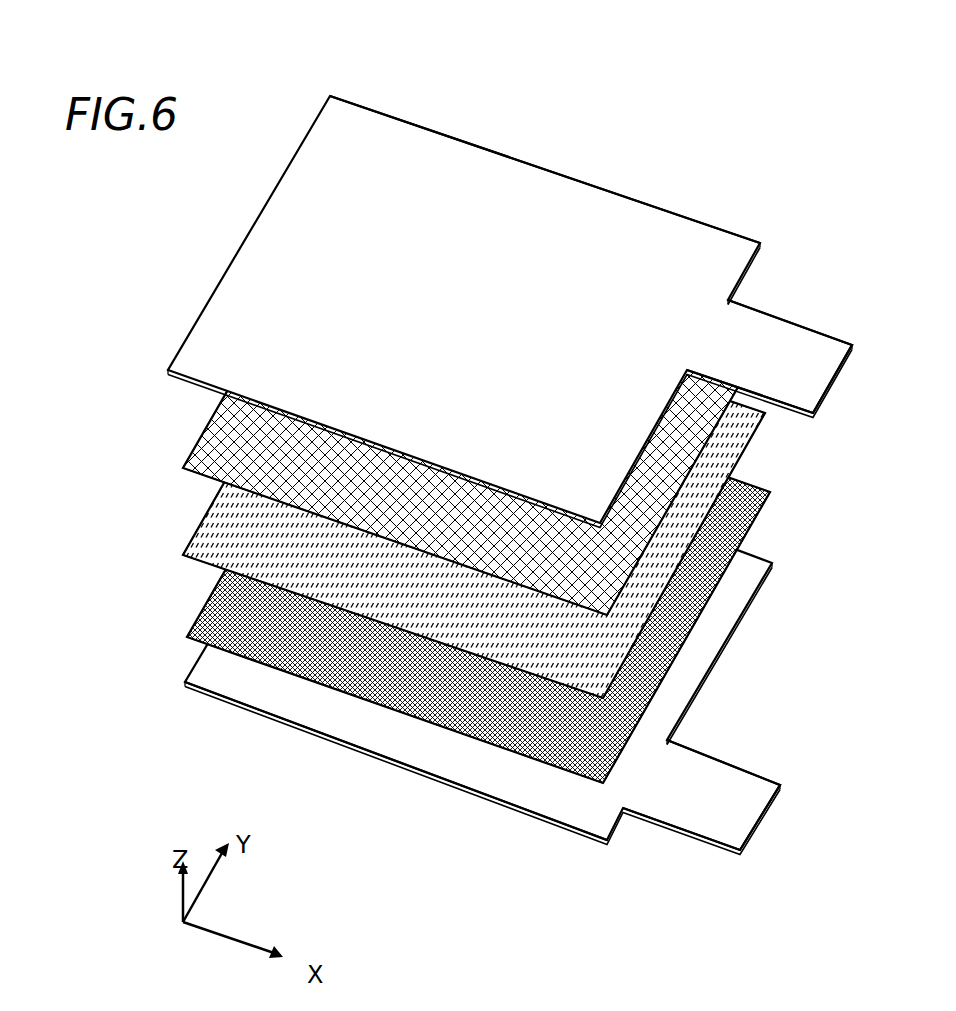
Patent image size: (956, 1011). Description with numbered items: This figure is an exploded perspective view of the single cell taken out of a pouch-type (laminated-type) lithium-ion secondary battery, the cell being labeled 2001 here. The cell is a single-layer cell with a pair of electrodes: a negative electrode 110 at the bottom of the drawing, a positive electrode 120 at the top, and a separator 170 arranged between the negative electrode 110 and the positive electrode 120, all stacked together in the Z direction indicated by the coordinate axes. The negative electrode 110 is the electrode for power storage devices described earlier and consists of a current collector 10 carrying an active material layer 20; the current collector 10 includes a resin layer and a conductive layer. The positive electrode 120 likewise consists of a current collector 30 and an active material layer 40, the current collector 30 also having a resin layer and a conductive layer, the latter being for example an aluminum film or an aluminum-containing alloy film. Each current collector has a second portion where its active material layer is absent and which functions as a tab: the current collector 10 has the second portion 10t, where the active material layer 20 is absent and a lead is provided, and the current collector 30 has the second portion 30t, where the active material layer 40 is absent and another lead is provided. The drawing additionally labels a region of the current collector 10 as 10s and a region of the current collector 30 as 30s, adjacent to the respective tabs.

The electrode assembly 2001 is at (776, 104).
The positive electrode 120 is at (100, 292).
The negative electrode 110 is at (83, 545).
The current collector 30 is at (255, 347).
The surface of positive electrode current collector 30s is at (690, 250).
The second portion 30t is at (797, 337).
The active material layer 40 is at (255, 462).
The separator 170 is at (225, 530).
The active material layer 20 is at (255, 620).
The current collector 10 is at (240, 690).
The surface of negative electrode current collector 10s is at (497, 783).
The second portion 10t is at (665, 802).